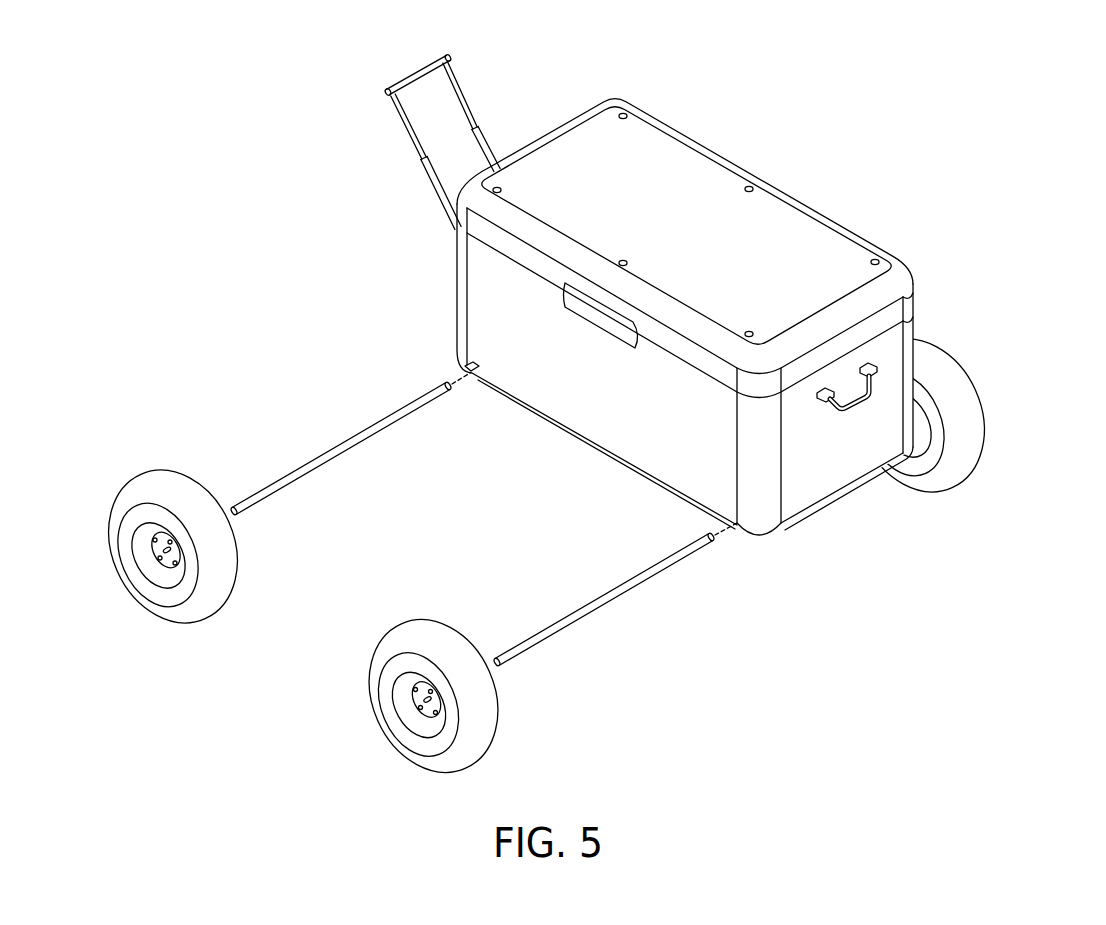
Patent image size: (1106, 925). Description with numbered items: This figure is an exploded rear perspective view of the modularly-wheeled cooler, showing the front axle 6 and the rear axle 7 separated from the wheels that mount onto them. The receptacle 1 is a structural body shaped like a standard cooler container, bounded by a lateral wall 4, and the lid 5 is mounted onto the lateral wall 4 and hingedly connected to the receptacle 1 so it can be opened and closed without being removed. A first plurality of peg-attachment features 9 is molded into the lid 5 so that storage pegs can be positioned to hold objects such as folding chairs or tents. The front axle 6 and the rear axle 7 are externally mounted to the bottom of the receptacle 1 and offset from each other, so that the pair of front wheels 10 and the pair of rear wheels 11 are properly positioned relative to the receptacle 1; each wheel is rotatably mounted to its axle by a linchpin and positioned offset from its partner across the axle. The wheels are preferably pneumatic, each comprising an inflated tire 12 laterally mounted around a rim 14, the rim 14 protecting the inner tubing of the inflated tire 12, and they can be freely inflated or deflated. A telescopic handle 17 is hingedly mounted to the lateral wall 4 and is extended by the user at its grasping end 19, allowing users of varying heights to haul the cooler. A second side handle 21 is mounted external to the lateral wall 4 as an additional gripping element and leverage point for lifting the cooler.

The receptacle 1 is at (925, 151).
The lateral wall 4 is at (463, 284).
The lid 5 is at (912, 297).
The first plurality of peg-attachment features 9 is at (621, 118).
The telescopic handle 17 is at (366, 183).
The grasping end 19 is at (422, 76).
The front axle 6 is at (358, 440).
The rear axle 7 is at (612, 594).
The pair of front wheels 10 is at (119, 460).
The pair of rear wheels 11 is at (994, 486).
The inflated tire 12 is at (120, 498).
The rim 14 is at (134, 568).
The second side handle 21 is at (845, 403).